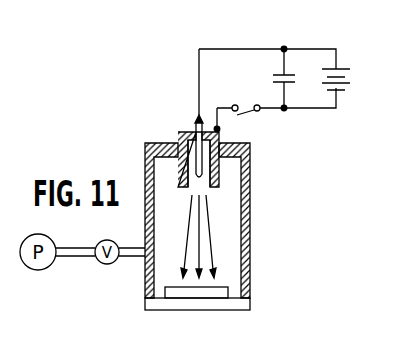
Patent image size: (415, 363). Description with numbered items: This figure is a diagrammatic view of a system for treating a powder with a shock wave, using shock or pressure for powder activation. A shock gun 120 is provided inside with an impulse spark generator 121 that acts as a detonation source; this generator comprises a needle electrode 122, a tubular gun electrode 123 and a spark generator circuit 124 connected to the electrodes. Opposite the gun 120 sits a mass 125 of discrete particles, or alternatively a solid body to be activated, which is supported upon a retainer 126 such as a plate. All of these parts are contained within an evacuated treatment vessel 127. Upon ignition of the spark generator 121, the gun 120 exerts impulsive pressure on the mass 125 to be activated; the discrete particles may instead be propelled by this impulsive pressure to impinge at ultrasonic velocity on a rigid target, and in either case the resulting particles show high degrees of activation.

The shock gun 120 is at (210, 195).
The impulse spark generator 121 is at (180, 113).
The needle electrode 122 is at (206, 166).
The tubular gun electrode 123 is at (219, 182).
The spark generator circuit 124 is at (332, 39).
The mass of discrete particles or solid body 125 is at (198, 293).
The retainer 126 is at (175, 307).
The evacuated treatment vessel 127 is at (146, 152).